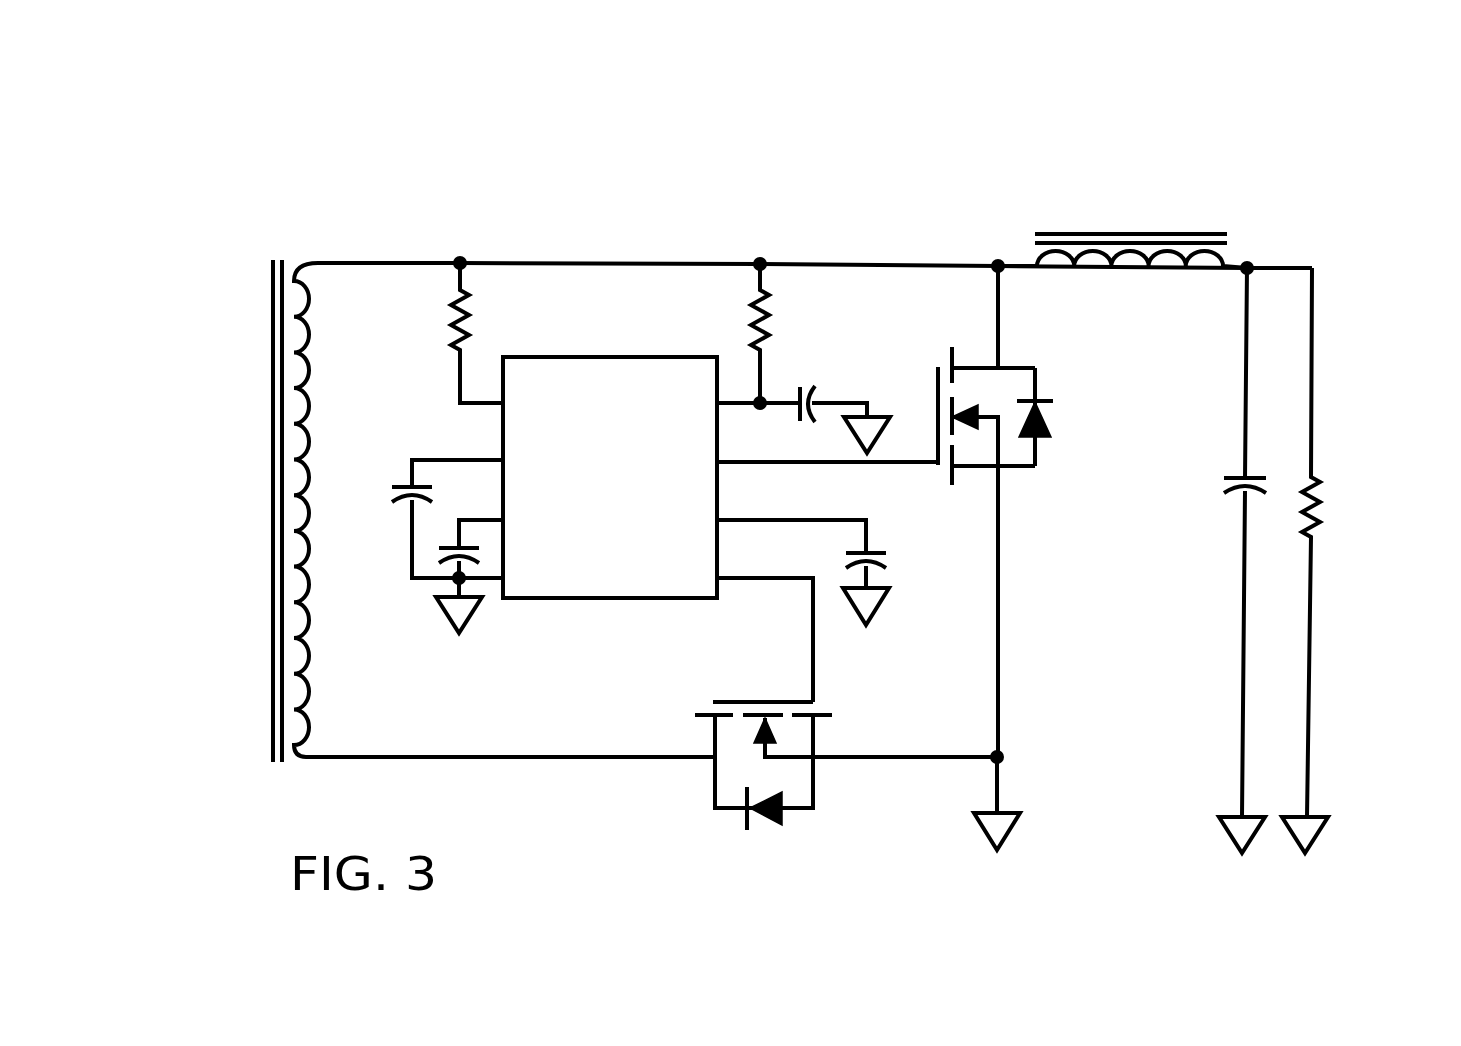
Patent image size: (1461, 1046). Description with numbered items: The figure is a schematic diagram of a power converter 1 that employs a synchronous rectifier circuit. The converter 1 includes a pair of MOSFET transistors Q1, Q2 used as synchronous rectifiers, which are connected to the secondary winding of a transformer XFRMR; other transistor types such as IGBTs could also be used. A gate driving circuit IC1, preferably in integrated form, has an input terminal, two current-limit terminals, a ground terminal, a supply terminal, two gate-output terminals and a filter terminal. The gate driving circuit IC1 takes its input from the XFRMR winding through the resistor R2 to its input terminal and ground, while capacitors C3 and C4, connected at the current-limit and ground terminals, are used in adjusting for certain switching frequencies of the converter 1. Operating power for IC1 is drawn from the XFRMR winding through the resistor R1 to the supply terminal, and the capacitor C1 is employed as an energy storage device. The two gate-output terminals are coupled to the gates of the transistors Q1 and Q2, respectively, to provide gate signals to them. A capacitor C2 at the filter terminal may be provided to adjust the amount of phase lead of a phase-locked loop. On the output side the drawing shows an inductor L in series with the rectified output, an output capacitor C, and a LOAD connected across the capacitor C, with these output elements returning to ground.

The power converter 1 is at (760, 203).
The transformer XFRMR is at (426, 511).
The gate driving circuit IC1 is at (630, 352).
The resistor R1 is at (732, 333).
The resistor R2 is at (446, 329).
The capacitor C1 is at (803, 392).
The capacitor C2 is at (823, 572).
The capacitor C3 is at (421, 519).
The capacitor C4 is at (429, 576).
The MOSFET transistor Q1 is at (1013, 477).
The MOSFET transistor Q2 is at (840, 733).
The inductor L is at (1122, 285).
The output capacitor C is at (1217, 557).
The load LOAD is at (1367, 560).